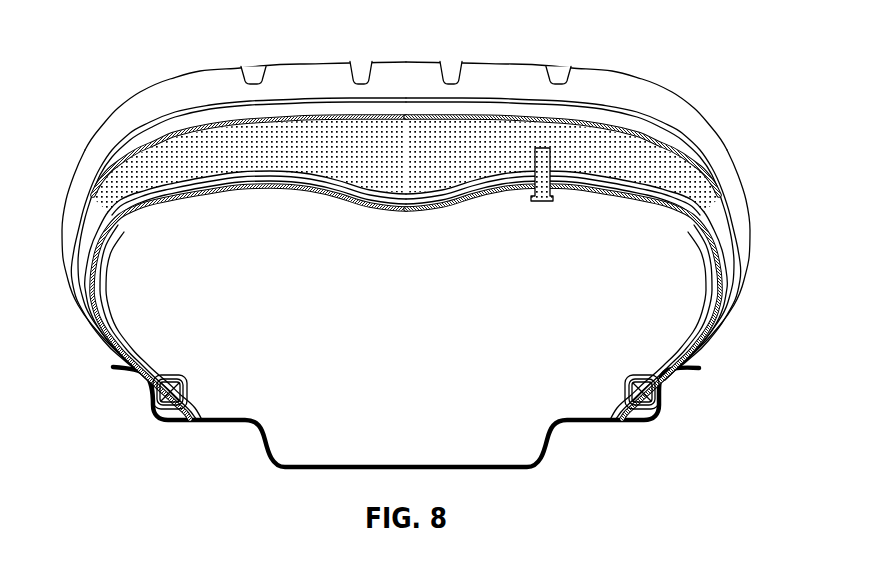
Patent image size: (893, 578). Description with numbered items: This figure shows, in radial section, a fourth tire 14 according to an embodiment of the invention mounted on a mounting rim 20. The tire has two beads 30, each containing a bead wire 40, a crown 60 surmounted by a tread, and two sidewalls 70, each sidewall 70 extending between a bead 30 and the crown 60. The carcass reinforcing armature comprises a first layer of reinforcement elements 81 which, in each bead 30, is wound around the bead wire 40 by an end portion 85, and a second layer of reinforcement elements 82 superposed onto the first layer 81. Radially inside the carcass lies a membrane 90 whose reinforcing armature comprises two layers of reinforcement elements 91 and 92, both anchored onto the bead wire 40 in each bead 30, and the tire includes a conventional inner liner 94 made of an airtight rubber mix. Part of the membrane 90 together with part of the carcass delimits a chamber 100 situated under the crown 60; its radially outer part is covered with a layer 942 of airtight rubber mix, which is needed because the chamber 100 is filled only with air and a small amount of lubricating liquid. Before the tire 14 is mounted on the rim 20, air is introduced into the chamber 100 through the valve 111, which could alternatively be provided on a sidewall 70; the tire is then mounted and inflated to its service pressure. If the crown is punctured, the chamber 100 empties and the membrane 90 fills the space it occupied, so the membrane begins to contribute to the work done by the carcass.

The tire 14 is at (720, 72).
The mounting rim 20 is at (548, 450).
The bead 30 is at (190, 388).
The bead wire 40 is at (150, 400).
The crown 60 is at (394, 85).
The sidewall 70 is at (62, 236).
The first layer of reinforcement elements 81 is at (77, 257).
The second layer of reinforcement elements 82 is at (78, 306).
The end portion 85 is at (112, 338).
The membrane 90 is at (289, 196).
The membrane reinforcement layer 91 is at (240, 184).
The membrane reinforcement layer 92 is at (90, 281).
The inner liner 94 is at (163, 183).
The chamber 100 is at (424, 164).
The valve 111 is at (552, 183).
The layer of airtight rubber mix 942 is at (221, 122).